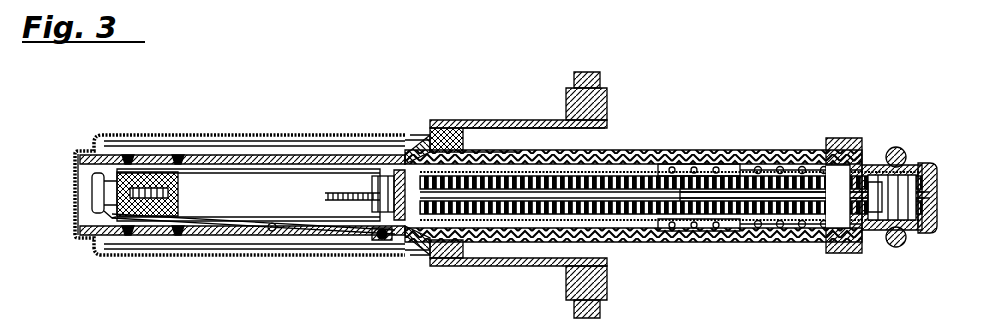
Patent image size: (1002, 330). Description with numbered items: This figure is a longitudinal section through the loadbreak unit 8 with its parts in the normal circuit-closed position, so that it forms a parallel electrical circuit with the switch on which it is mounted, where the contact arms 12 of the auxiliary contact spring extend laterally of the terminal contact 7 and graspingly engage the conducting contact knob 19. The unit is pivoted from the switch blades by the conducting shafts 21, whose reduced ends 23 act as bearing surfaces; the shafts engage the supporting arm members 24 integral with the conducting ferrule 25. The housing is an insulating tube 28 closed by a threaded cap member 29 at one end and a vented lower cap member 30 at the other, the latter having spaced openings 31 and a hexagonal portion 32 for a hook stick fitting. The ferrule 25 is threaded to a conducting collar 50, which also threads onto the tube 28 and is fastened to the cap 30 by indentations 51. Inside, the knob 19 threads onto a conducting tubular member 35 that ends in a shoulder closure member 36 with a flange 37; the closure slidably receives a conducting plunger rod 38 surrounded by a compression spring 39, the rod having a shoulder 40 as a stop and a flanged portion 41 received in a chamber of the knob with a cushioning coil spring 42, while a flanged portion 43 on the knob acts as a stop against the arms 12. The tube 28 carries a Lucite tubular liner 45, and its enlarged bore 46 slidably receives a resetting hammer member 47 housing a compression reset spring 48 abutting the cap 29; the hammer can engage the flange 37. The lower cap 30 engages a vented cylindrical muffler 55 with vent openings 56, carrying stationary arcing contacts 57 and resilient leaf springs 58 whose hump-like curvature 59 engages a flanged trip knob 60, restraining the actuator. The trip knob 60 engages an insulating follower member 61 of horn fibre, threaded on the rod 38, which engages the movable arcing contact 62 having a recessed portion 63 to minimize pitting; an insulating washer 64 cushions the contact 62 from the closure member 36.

The terminal contact 7 is at (398, 57).
The loadbreak unit 8 is at (735, 152).
The contact arms 12 is at (897, 247).
The conducting contact knob 19 is at (875, 214).
The conducting shafts 21 is at (568, 296).
The reduced ends 23 is at (576, 313).
The supporting arm members 24 is at (512, 266).
The conducting ferrule 25 is at (450, 128).
The insulating tube 28 is at (646, 150).
The threaded cap member 29 is at (846, 253).
The vented lower cap member 30 is at (124, 134).
The spaced openings 31 is at (338, 256).
The hexagonal portion 32 is at (84, 151).
The conducting tubular member 35 is at (490, 243).
The shoulder closure member 36 is at (424, 258).
The flange 37 is at (408, 238).
The conducting plunger rod 38 is at (556, 190).
The compression spring 39 is at (596, 193).
The shoulder 40 is at (674, 216).
The flanged portion 41 is at (880, 182).
The cushioning coil spring 42 is at (937, 196).
The flanged portion 43 is at (931, 234).
The tubular liner 45 is at (594, 150).
The bore 46 is at (782, 230).
The resetting hammer member 47 is at (714, 231).
The compression reset spring 48 is at (750, 230).
The conducting collar 50 is at (465, 140).
The indentations 51 is at (410, 258).
The vented cylindrical muffler 55 is at (157, 156).
The vent openings 56 is at (188, 157).
The stationary arcing contacts 57 is at (378, 241).
The resilient leaf springs 58 is at (222, 232).
The hump-like curvature 59 is at (110, 214).
The flanged trip knob 60 is at (96, 193).
The insulating follower member 61 is at (219, 183).
The movable arcing contact 62 is at (381, 176).
The recessed portion 63 is at (364, 181).
The insulating washer 64 is at (402, 168).